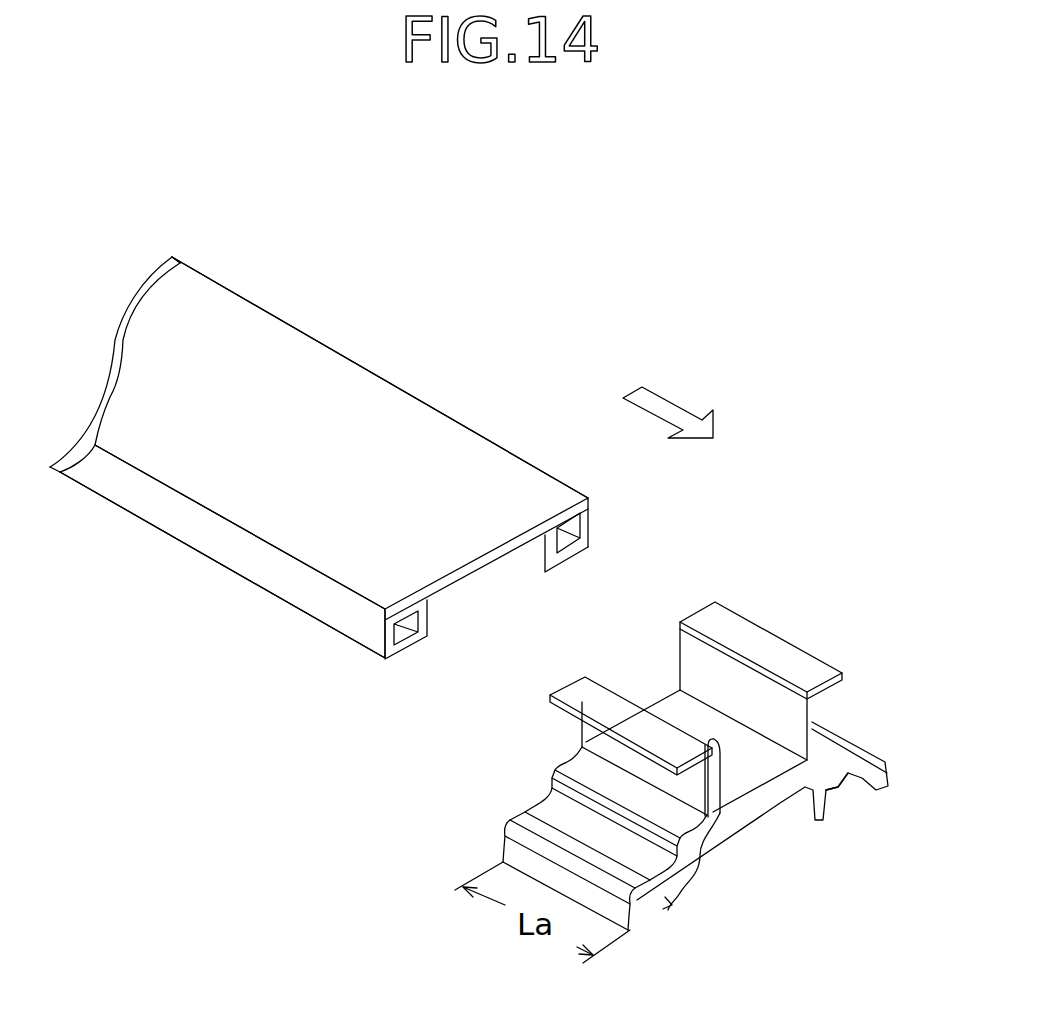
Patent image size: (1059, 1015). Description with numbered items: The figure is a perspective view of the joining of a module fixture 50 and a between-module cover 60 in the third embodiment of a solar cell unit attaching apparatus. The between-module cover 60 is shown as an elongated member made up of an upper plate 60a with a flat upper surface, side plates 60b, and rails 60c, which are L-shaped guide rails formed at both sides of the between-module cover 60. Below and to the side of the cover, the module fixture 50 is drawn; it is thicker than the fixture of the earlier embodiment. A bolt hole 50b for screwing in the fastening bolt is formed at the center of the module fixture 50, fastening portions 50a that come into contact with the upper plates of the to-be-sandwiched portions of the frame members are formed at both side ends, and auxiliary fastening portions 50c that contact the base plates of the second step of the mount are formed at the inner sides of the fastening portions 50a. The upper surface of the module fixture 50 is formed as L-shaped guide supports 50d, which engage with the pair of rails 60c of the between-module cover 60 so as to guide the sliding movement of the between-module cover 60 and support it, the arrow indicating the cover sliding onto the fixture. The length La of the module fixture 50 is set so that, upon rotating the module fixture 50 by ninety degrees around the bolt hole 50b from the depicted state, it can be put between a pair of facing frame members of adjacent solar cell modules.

The between-module cover 60 is at (300, 343).
The upper plate 60a is at (423, 416).
The side plates 60b is at (243, 570).
The rails 60c is at (417, 642).
The module fixture 50 is at (772, 808).
The fastening portions 50a is at (890, 783).
The bolt hole 50b is at (720, 755).
The auxiliary fastening portions 50c is at (840, 817).
The guide supports 50d is at (622, 705).